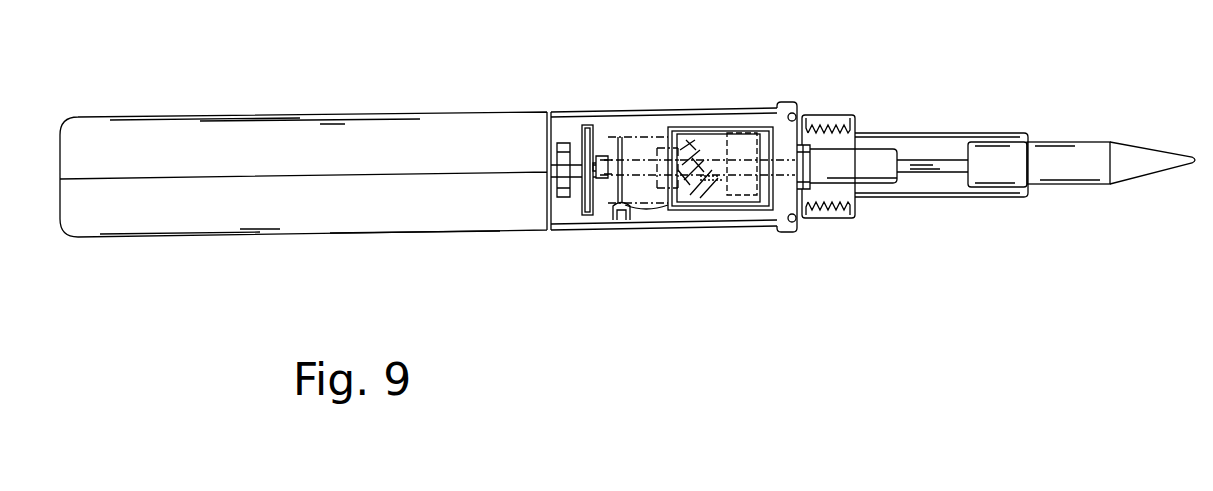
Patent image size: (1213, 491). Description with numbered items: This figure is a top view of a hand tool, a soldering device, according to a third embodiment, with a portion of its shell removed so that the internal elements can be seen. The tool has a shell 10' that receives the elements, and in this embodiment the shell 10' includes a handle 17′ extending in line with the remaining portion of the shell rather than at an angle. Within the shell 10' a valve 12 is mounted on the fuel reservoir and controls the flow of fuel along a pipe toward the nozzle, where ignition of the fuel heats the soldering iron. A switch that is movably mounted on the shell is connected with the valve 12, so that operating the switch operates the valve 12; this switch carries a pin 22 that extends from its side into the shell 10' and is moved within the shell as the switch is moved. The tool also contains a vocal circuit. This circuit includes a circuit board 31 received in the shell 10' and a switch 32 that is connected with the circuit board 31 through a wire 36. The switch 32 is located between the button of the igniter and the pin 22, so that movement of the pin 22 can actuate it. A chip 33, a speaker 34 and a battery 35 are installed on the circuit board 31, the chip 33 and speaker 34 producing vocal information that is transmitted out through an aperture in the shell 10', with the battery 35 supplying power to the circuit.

The handle 17′ is at (493, 212).
The shell 10' is at (873, 127).
The valve 12 is at (603, 156).
The pin 22 is at (652, 137).
The circuit board 31 is at (745, 130).
The switch 32 is at (618, 215).
The chip 33 is at (748, 182).
The speaker 34 is at (697, 200).
The battery 35 is at (743, 145).
The wire 36 is at (654, 208).